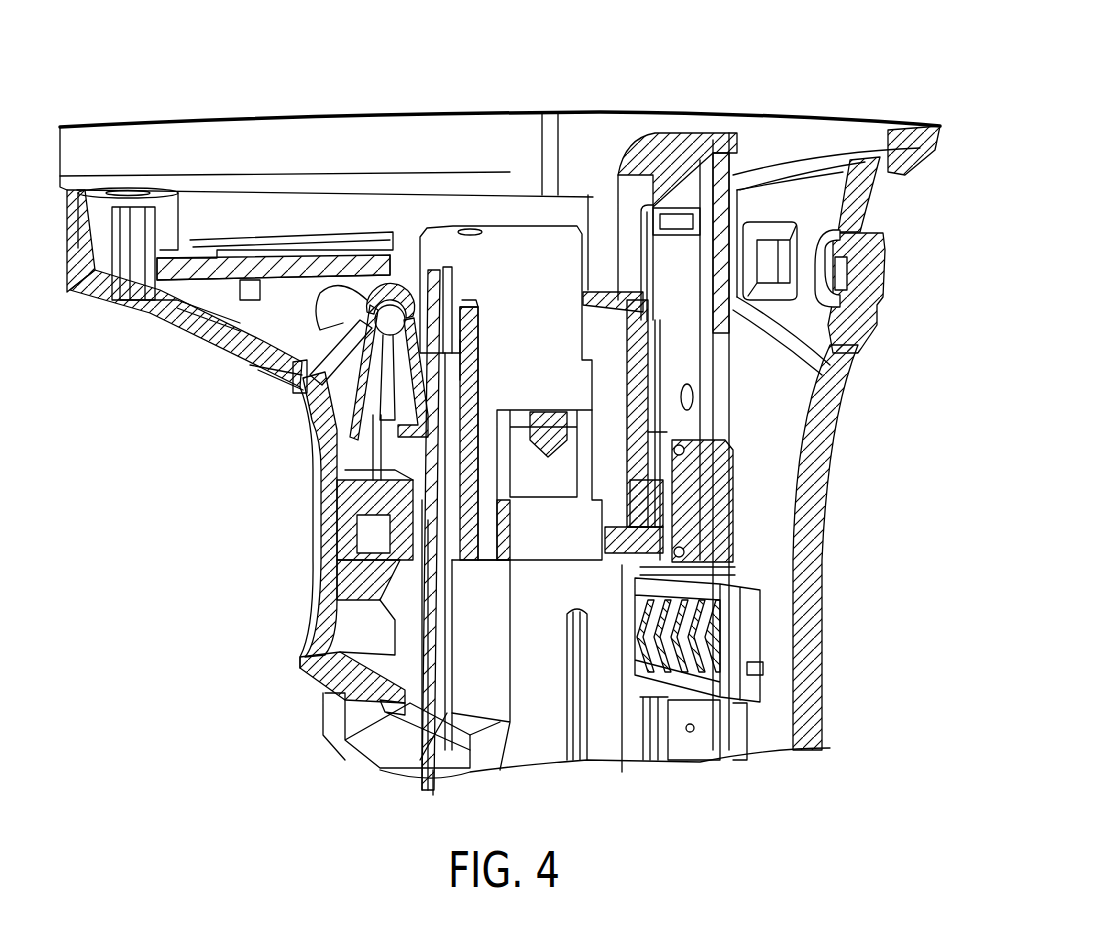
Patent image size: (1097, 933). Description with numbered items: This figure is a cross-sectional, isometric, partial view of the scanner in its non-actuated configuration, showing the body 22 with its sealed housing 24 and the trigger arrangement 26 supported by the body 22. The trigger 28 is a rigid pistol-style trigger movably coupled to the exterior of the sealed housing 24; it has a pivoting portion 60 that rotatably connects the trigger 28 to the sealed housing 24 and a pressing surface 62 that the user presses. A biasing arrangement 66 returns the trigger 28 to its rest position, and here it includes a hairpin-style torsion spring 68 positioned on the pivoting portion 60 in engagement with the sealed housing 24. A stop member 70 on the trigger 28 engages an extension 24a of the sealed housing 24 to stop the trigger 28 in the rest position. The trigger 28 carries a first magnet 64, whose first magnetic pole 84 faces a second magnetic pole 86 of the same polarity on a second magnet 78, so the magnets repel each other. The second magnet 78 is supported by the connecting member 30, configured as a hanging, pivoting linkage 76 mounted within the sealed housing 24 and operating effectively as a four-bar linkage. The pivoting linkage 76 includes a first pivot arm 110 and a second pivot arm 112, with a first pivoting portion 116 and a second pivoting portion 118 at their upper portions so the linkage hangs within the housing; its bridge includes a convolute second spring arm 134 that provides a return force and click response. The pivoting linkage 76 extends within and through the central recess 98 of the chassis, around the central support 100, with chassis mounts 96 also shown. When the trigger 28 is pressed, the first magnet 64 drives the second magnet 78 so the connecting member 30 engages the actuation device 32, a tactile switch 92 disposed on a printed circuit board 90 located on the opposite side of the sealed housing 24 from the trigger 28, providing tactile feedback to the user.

The body 22 is at (897, 103).
The sealed housing 24 is at (822, 597).
The extension 24a is at (335, 715).
The trigger arrangement 26 is at (247, 641).
The trigger 28 is at (300, 660).
The connecting member 30 is at (652, 430).
The actuation device 32 is at (730, 552).
The pivoting portion 60 is at (391, 318).
The pressing surface 62 is at (328, 567).
The first magnet 64 is at (398, 518).
The biasing arrangement 66 is at (318, 398).
The torsion spring 68 is at (348, 312).
The stop member 70 is at (385, 715).
The pivoting linkage 76 is at (597, 333).
The second magnet 78 is at (462, 548).
The first magnetic pole 84 is at (433, 659).
The second magnetic pole 86 is at (432, 575).
The printed circuit board 90 is at (728, 742).
The tactile switch 92 is at (700, 495).
The chassis mounts 96 is at (93, 196).
The central recess 98 is at (546, 283).
The central support 100 is at (606, 527).
The first pivot arm 110 is at (480, 358).
The second pivot arm 112 is at (602, 392).
The first pivoting portion 116 is at (466, 305).
The second pivoting portion 118 is at (590, 135).
The second spring arm 134 is at (622, 683).